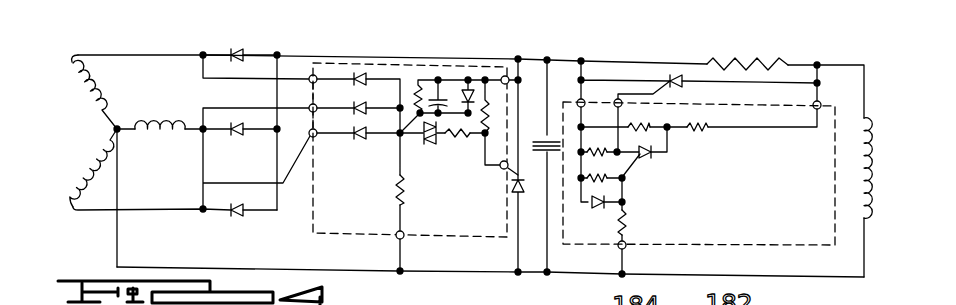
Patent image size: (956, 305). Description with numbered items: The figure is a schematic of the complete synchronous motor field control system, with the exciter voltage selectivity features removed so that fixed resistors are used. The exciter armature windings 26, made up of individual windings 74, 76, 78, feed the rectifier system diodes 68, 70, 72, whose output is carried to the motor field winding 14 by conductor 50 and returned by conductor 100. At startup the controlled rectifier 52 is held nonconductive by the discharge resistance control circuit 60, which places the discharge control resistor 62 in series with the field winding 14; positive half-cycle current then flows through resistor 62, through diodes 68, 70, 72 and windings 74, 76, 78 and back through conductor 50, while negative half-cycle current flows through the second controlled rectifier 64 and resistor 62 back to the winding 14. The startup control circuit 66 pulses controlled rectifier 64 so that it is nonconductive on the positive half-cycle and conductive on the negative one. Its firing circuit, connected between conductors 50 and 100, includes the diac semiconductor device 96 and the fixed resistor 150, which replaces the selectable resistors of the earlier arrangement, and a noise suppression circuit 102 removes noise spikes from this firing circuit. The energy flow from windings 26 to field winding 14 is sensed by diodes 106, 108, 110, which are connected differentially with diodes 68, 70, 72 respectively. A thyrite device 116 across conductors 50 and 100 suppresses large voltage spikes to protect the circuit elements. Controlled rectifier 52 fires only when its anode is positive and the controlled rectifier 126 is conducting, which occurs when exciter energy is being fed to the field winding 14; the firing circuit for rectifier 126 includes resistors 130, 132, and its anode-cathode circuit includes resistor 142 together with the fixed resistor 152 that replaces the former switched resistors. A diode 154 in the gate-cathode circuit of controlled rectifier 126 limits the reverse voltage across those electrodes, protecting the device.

The motor field winding 14 is at (860, 176).
The exciter armature windings 26 is at (106, 113).
The conductor 50 is at (256, 266).
The controlled rectifier 52 is at (675, 72).
The discharge resistance control circuit 60 is at (780, 243).
The discharge control resistor 62 is at (752, 60).
The second controlled rectifier 64 is at (508, 188).
The startup control circuit 66 is at (309, 176).
The diode 68 is at (241, 50).
The diode 70 is at (238, 143).
The diode 72 is at (233, 218).
The individual winding 74 is at (93, 90).
The individual winding 76 is at (163, 123).
The individual winding 78 is at (85, 174).
The diac semiconductor device 96 is at (432, 143).
The conductor 100 is at (392, 59).
The noise suppression circuit 102 is at (457, 71).
The diode 106 is at (361, 70).
The diode 108 is at (360, 120).
The diode 110 is at (367, 129).
The thyrite device 116 is at (547, 135).
The controlled rectifier 126 is at (650, 156).
The resistor 130 is at (623, 218).
The resistor 132 is at (601, 180).
The resistor 142 is at (592, 148).
The fixed resistor 150 is at (390, 213).
The fixed resistor 152 is at (696, 135).
The diode 154 is at (600, 208).